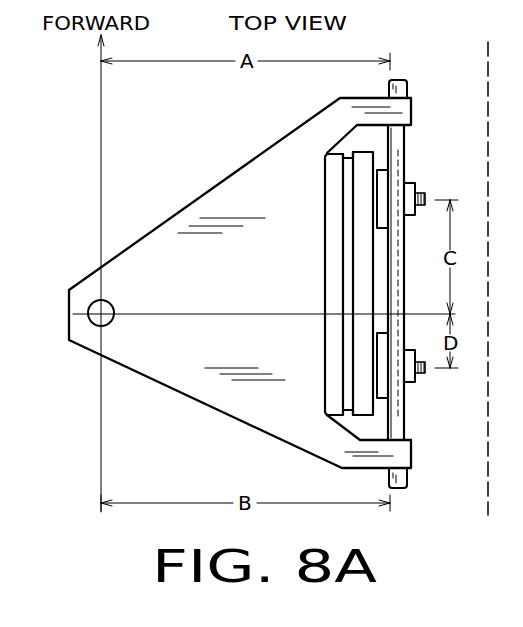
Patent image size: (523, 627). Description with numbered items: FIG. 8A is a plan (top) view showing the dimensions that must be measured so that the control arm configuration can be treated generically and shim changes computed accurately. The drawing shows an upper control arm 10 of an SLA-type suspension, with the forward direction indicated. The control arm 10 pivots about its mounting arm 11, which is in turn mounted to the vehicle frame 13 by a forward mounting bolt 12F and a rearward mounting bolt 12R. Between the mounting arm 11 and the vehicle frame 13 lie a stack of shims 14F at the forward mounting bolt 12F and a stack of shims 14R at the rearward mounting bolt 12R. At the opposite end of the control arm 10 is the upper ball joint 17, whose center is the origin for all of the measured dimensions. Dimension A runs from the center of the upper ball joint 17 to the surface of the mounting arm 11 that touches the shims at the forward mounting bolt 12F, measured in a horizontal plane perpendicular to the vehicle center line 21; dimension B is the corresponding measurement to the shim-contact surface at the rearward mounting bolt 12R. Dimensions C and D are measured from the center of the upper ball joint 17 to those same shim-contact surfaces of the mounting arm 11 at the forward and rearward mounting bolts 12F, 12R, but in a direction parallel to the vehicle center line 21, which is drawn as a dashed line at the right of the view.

The upper control arm 10 is at (198, 382).
The mounting arm 11 is at (398, 428).
The forward mounting bolt 12F is at (427, 197).
The rearward mounting bolt 12R is at (423, 375).
The vehicle frame 13 is at (362, 168).
The forward stack of shims 14F is at (380, 193).
The rearward stack of shims 14R is at (380, 400).
The upper ball joint 17 is at (95, 322).
The vehicle center line 21 is at (488, 78).